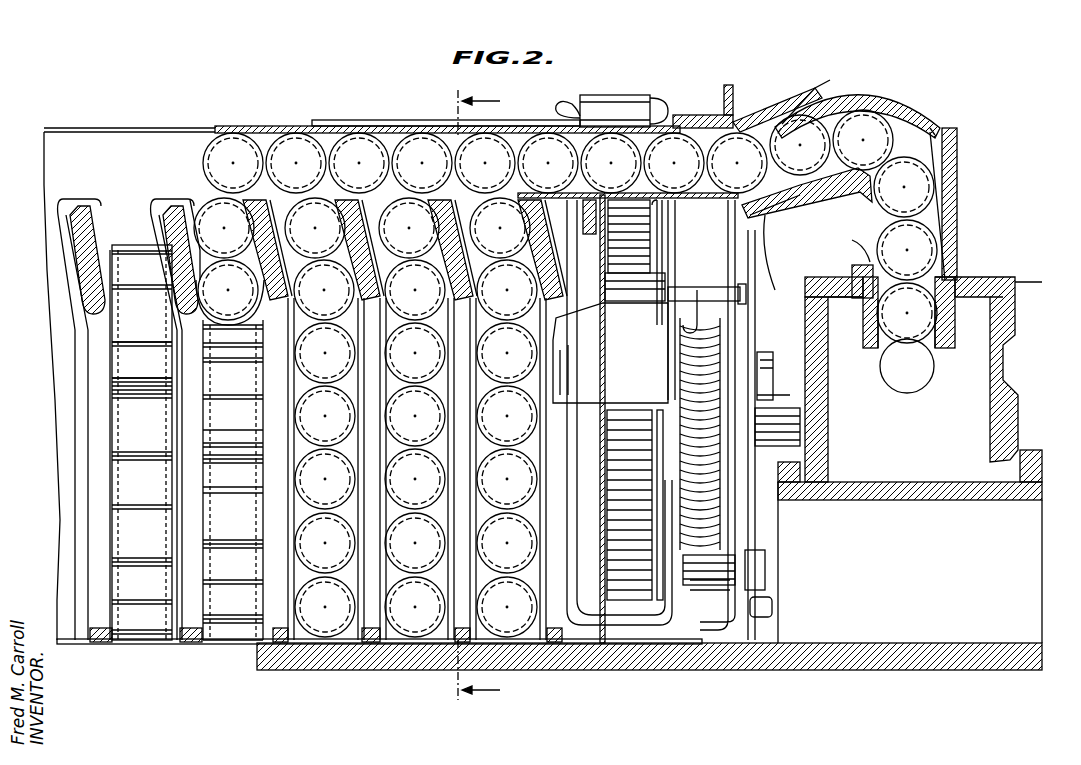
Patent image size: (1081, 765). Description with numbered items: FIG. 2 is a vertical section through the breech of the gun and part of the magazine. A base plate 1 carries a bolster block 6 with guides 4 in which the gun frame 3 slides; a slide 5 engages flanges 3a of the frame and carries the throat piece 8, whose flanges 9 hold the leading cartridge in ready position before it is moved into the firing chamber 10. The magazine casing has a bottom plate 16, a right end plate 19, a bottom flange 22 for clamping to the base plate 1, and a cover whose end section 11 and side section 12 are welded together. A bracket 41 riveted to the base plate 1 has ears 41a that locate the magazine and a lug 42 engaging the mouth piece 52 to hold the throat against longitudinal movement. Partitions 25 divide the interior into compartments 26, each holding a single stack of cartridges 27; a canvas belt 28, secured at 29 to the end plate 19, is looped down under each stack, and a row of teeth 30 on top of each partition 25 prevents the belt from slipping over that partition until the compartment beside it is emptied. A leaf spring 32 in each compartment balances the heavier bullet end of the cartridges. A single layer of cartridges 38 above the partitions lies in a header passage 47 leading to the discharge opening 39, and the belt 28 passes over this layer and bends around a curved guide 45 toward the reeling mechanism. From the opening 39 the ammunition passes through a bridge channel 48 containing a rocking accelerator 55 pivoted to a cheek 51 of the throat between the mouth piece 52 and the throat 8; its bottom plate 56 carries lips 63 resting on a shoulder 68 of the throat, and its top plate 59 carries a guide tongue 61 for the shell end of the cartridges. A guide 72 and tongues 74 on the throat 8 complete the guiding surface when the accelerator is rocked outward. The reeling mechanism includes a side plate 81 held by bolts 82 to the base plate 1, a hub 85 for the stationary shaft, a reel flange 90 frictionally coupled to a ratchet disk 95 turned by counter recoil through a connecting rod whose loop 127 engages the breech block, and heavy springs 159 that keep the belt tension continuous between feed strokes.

The base plate 1 is at (860, 660).
The gun frame 3 is at (1005, 310).
The flanges of the gun frame 3a is at (1005, 290).
The guides 4 is at (1028, 470).
The slide 5 is at (976, 288).
The bolster block 6 is at (920, 502).
The throat piece 8 is at (958, 240).
The flanges of the throat piece 9 is at (886, 344).
The firing chamber 10 is at (908, 382).
The end section of cover plate 11 is at (388, 122).
The side section of cover plate 12 is at (167, 128).
The bottom plate 16 is at (208, 650).
The right end plate 19 is at (598, 522).
The bottom flange 22 is at (618, 645).
The partitions 25 is at (100, 256).
The compartments 26 is at (135, 215).
The cartridges 27 is at (520, 622).
The flexible feeding device 28 is at (243, 130).
The belt securing point 29 is at (593, 236).
The teeth 30 is at (92, 200).
The spring 32 is at (230, 558).
The single layer of cartridges 38 is at (278, 128).
The discharge opening 39 is at (672, 116).
The bracket 41 is at (682, 568).
The ears 41a is at (612, 353).
The lug 42 is at (686, 212).
The curved guide 45 is at (576, 110).
The header passage 47 is at (110, 160).
The bridge channel 48 is at (935, 126).
The cheek 51 is at (805, 206).
The mouth piece 52 is at (728, 112).
The rocking regulator element 55 is at (818, 88).
The bottom plate of rocking member 56 is at (778, 258).
The top plate of rocking member 59 is at (762, 106).
The guide tongue 61 is at (876, 112).
The lips 63 is at (878, 200).
The shoulder 68 is at (852, 262).
The guide 72 is at (957, 150).
The tongues 74 is at (858, 248).
The side plate 81 is at (736, 515).
The bolts 82 is at (772, 600).
The hub 85 is at (767, 356).
The flange of the reel 90 is at (664, 248).
The ratchet disk 95 is at (678, 280).
The loop of connecting rod 127 is at (790, 428).
The heavy springs 159 is at (716, 510).